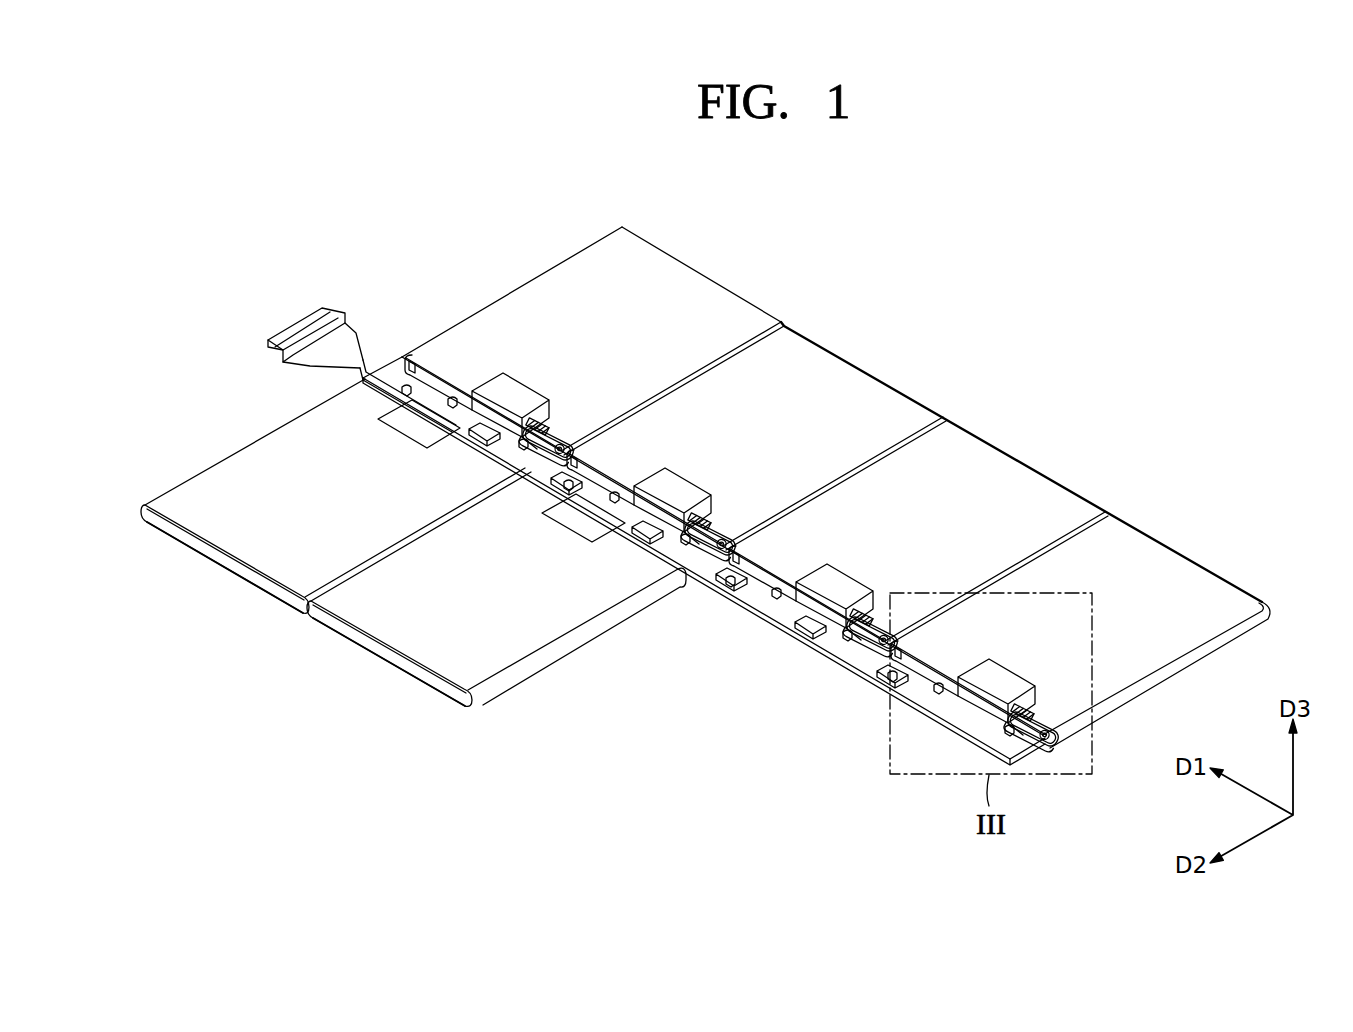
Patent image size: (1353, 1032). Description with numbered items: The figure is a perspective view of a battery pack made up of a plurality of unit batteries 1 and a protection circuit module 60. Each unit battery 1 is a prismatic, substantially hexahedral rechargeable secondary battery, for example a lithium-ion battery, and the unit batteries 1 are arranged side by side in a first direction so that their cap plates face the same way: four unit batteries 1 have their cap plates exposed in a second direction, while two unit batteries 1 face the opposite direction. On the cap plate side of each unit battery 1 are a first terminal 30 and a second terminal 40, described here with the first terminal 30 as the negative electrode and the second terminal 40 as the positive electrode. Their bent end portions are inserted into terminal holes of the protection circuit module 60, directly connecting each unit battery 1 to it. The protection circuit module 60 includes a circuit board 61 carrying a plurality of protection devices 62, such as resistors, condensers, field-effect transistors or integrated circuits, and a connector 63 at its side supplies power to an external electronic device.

The unit battery 1 is at (711, 264).
The first terminal 30 is at (544, 431).
The second terminal 40 is at (447, 383).
The protection circuit module 60 is at (738, 683).
The circuit board 61 is at (773, 621).
The protection device 62 is at (727, 586).
The connector 63 is at (303, 328).